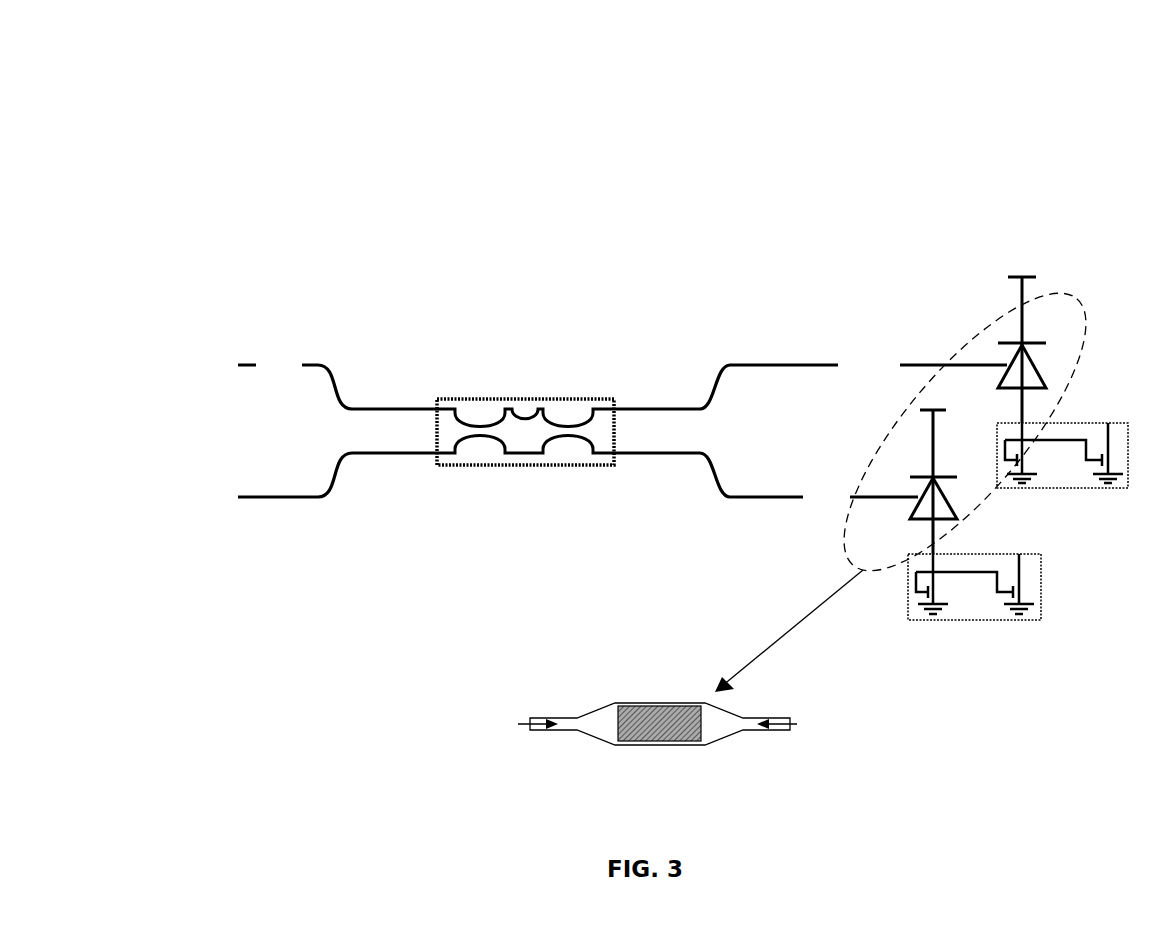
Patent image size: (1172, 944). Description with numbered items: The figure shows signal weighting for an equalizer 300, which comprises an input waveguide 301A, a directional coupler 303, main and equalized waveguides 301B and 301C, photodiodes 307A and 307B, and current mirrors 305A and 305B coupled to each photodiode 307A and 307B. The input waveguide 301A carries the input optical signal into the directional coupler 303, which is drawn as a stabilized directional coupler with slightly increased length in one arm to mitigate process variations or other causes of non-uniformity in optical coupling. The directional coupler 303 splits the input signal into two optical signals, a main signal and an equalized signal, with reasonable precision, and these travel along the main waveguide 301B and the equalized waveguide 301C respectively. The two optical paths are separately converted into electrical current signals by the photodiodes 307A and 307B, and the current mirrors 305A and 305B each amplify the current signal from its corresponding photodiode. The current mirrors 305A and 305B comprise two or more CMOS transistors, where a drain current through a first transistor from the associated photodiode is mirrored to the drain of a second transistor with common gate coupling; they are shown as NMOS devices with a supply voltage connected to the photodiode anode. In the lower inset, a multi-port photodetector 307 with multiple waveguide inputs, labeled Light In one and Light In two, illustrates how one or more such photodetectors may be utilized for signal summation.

The equalizer 300 is at (194, 102).
The input waveguide 301A is at (243, 368).
The main waveguide 301B is at (775, 367).
The equalized waveguide 301C is at (757, 498).
The directional coupler 303 is at (557, 398).
The current mirror 305A is at (1125, 489).
The current mirror 305B is at (910, 621).
The multi-port photodetector 307 is at (652, 703).
The photodiode 307A is at (1068, 373).
The photodiode 307B is at (910, 522).